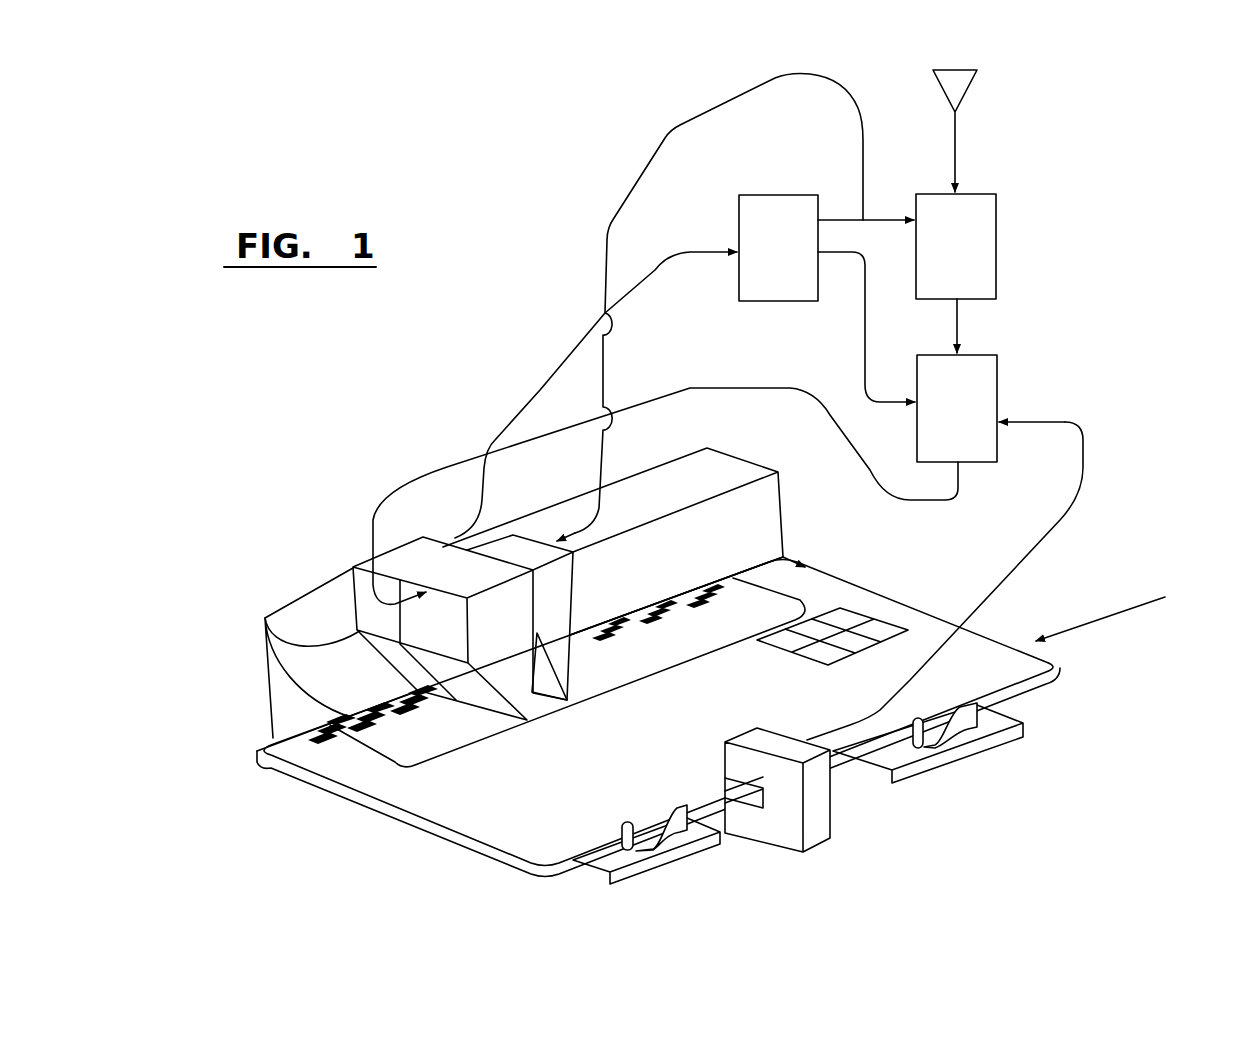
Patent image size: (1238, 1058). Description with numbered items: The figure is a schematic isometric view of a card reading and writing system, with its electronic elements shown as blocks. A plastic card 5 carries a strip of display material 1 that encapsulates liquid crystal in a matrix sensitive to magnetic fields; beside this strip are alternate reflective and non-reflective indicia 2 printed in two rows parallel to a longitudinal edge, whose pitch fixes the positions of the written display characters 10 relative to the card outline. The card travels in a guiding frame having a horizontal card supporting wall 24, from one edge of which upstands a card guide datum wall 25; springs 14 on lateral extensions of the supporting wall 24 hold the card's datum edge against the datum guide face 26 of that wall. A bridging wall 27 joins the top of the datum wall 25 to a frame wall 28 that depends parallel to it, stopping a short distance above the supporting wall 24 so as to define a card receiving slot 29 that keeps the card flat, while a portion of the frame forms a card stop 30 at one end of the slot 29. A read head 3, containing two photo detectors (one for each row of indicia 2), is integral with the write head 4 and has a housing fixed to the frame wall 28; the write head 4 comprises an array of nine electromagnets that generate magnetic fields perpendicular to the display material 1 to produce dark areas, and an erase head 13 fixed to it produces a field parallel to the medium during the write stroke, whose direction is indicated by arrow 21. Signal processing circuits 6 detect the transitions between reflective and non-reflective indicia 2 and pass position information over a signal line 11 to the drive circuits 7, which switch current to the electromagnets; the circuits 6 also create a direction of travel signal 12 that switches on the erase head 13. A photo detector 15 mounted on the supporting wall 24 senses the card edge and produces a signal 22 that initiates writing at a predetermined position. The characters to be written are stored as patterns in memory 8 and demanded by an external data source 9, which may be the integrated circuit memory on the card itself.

The strip of display material 1 is at (387, 750).
The indicia 2 is at (358, 735).
The read head 3 is at (360, 577).
The write head 4 is at (512, 690).
The plastic card 5 is at (337, 777).
The signal processing circuits 6 is at (778, 225).
The drive circuits 7 is at (960, 393).
The memory 8 is at (955, 245).
The external source 9 is at (958, 82).
The display characters 10 is at (443, 733).
The signal line 11 is at (665, 428).
The direction of travel signal 12 is at (735, 308).
The erase head 13 is at (567, 663).
The springs 14 is at (667, 827).
The photo detector 15 is at (820, 798).
The write stroke direction arrow 21 is at (1100, 622).
The card edge signal 22 is at (1036, 565).
The card supporting wall 24 is at (590, 876).
The card guide datum wall 25 is at (263, 652).
The datum guide face 26 is at (312, 708).
The bridging wall 27 is at (682, 501).
The frame wall 28 is at (717, 555).
The card receiving slot 29 is at (753, 570).
The card stop 30 is at (783, 557).